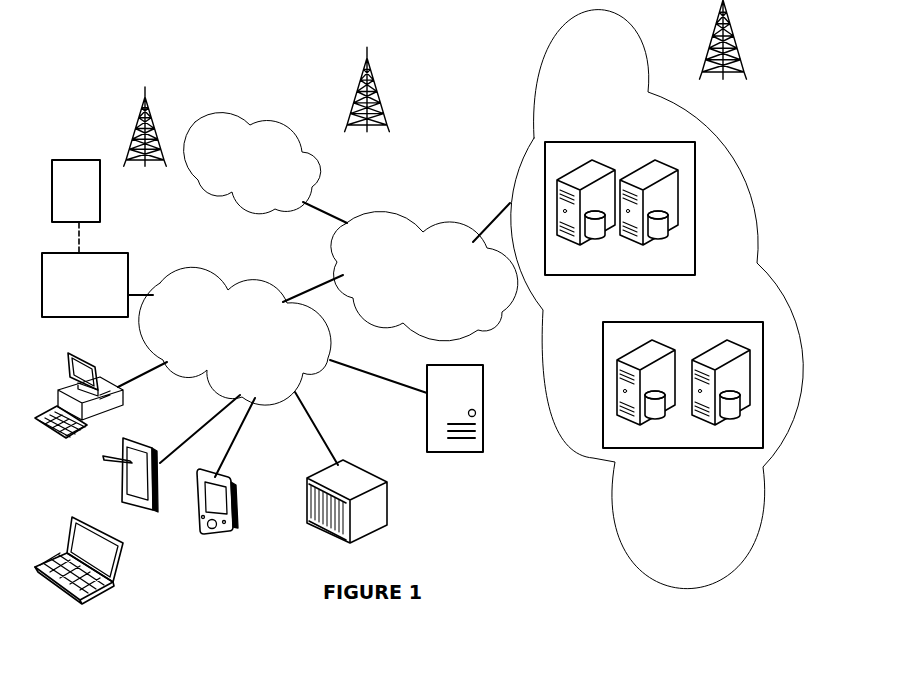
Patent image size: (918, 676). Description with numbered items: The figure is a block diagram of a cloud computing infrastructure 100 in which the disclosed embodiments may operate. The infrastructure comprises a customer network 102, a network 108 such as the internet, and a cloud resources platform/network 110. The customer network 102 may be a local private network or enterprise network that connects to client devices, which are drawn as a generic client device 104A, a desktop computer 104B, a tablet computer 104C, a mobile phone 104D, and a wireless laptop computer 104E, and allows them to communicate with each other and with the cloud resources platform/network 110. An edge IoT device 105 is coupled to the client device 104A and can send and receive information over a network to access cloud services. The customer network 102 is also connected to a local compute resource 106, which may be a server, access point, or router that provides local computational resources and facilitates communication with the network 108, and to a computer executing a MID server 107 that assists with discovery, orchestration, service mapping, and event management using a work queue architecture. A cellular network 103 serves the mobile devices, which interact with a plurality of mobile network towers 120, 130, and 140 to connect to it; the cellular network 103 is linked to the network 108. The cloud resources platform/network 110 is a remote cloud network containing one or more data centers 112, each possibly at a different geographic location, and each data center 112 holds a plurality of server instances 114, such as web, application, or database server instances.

The cloud computing infrastructure 100 is at (202, 70).
The customer network 102 is at (210, 273).
The cellular network 103 is at (272, 127).
The client device 104A is at (102, 253).
The desktop computer 104B is at (87, 358).
The tablet computer 104C is at (140, 439).
The mobile phone 104D is at (230, 480).
The laptop computer 104E is at (125, 543).
The edge IoT device 105 is at (63, 160).
The local compute resource 106 is at (347, 463).
The MID server 107 is at (448, 453).
The network 108 is at (383, 207).
The cloud resources platform/network 110 is at (723, 142).
The data center 112 is at (573, 142).
The server instance 114 is at (594, 236).
The mobile network tower 120 is at (367, 101).
The mobile network tower 130 is at (145, 140).
The mobile network tower 140 is at (722, 51).